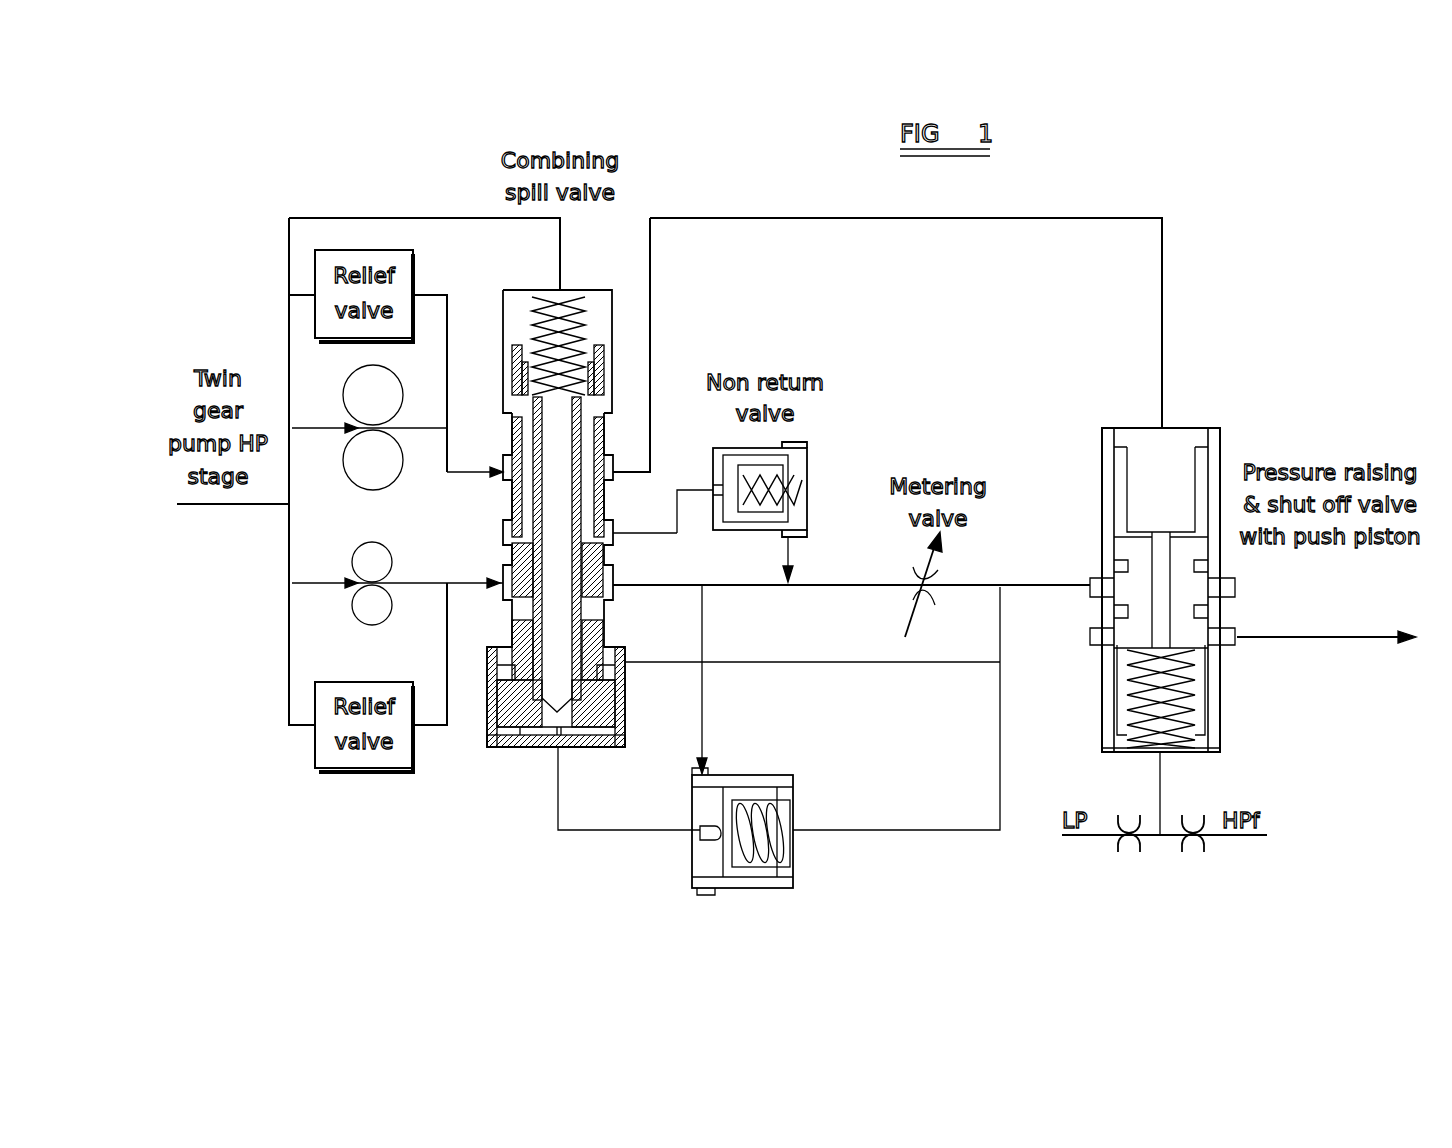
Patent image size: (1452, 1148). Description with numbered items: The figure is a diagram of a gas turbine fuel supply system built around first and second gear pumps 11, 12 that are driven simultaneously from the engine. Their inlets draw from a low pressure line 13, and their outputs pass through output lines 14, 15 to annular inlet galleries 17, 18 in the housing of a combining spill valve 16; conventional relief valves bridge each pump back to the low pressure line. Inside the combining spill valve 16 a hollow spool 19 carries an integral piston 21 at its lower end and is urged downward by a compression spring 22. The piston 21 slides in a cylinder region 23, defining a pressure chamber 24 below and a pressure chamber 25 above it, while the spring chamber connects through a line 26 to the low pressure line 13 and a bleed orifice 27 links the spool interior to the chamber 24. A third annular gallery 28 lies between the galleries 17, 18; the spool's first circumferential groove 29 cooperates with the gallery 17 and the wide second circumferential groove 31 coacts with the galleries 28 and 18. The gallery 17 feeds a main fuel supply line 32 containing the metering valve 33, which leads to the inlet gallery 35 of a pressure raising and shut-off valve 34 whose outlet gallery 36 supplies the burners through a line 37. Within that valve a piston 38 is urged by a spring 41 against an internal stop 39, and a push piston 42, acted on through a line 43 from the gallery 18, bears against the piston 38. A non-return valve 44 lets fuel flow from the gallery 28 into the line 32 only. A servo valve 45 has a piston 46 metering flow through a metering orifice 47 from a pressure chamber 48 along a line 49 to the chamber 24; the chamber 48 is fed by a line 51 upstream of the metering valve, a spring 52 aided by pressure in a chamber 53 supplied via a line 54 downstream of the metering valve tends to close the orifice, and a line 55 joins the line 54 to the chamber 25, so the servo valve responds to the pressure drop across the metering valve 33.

The first gear pump 11 is at (370, 603).
The second gear pump 12 is at (355, 398).
The low pressure line 13 is at (288, 540).
The output line 14 is at (498, 610).
The output line 15 is at (500, 468).
The combining spill valve 16 is at (600, 285).
The inlet gallery 17 is at (500, 700).
The inlet gallery 18 is at (503, 490).
The spool 19 is at (603, 560).
The piston 21 is at (520, 748).
The compression spring 22 is at (535, 320).
The cylinder region 23 is at (622, 712).
The pressure chamber 24 is at (580, 748).
The pressure chamber 25 is at (625, 655).
The line 26 is at (335, 218).
The bleed orifice 27 is at (555, 748).
The annular gallery 28 is at (503, 533).
The first circumferential groove 29 is at (603, 612).
The second circumferential groove 31 is at (595, 432).
The main fuel supply line 32 is at (862, 588).
The metering valve 33 is at (913, 570).
The pressure raising and shut-off valve 34 is at (1228, 448).
The inlet gallery 35 is at (1098, 580).
The outlet gallery 36 is at (1238, 650).
The line 37 is at (1362, 645).
The piston 38 is at (1205, 708).
The internal stop 39 is at (1237, 605).
The spring 41 is at (1127, 740).
The push piston 42 is at (1198, 428).
The line 43 is at (1025, 222).
The non-return valve 44 is at (805, 445).
The servo valve 45 is at (760, 898).
The piston 46 is at (740, 880).
The metering orifice 47 is at (700, 838).
The pressure chamber 48 is at (700, 870).
The line 49 is at (565, 832).
The line 51 is at (708, 735).
The spring 52 is at (795, 862).
The chamber 53 is at (793, 795).
The line 54 is at (1000, 632).
The line 55 is at (918, 662).